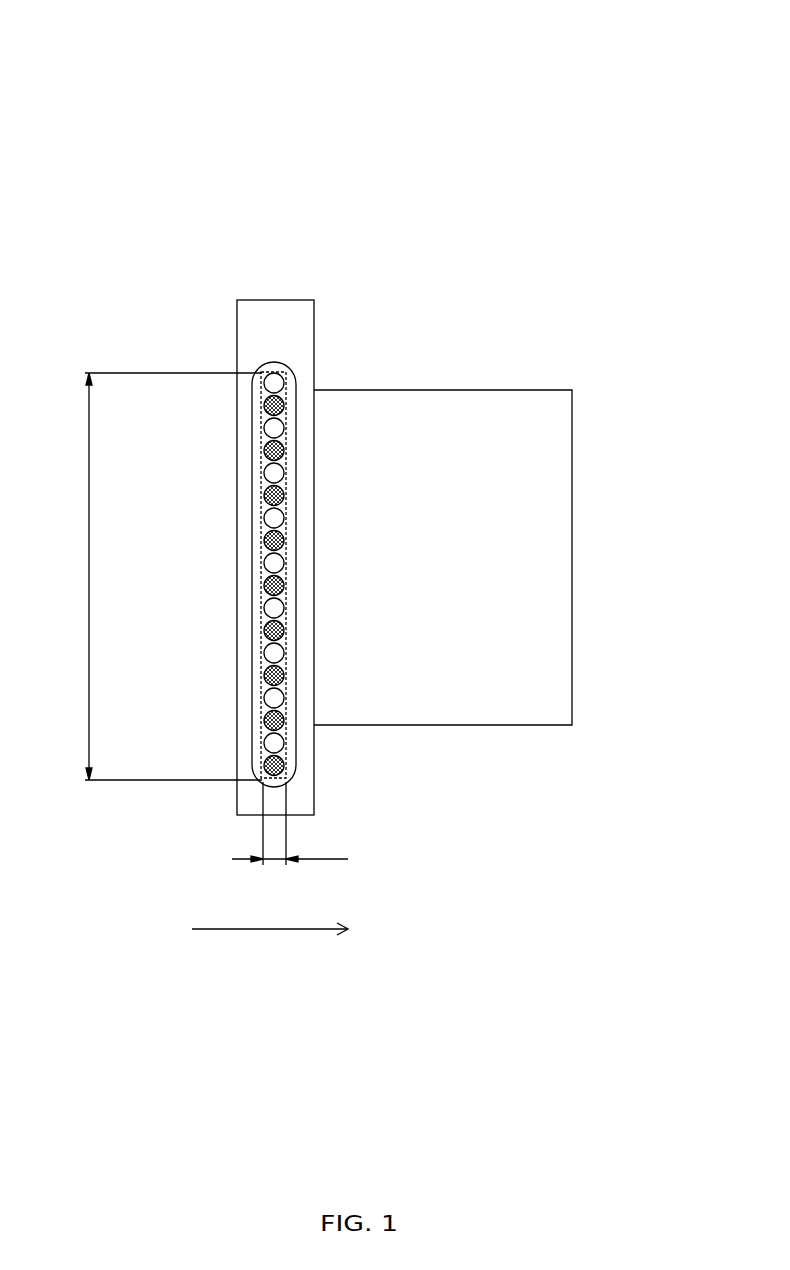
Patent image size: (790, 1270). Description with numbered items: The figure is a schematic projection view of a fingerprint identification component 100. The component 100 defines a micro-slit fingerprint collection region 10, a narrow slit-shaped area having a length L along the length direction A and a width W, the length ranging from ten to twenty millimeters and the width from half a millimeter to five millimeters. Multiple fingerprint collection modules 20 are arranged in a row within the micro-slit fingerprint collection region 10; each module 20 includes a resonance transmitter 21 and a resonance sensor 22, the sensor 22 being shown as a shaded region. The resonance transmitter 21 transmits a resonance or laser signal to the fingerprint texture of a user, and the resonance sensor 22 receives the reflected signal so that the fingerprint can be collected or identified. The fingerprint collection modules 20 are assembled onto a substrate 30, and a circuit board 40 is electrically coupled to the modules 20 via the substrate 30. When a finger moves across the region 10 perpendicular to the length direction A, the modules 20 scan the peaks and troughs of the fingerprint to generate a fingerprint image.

The fingerprint identification component 100 is at (455, 90).
The micro-slit fingerprint collection region 10 is at (263, 722).
The fingerprint collection modules 20 is at (173, 470).
The resonance transmitter 21 is at (262, 472).
The resonance sensor 22 is at (263, 500).
The substrate 30 is at (255, 328).
The circuit board 40 is at (475, 412).